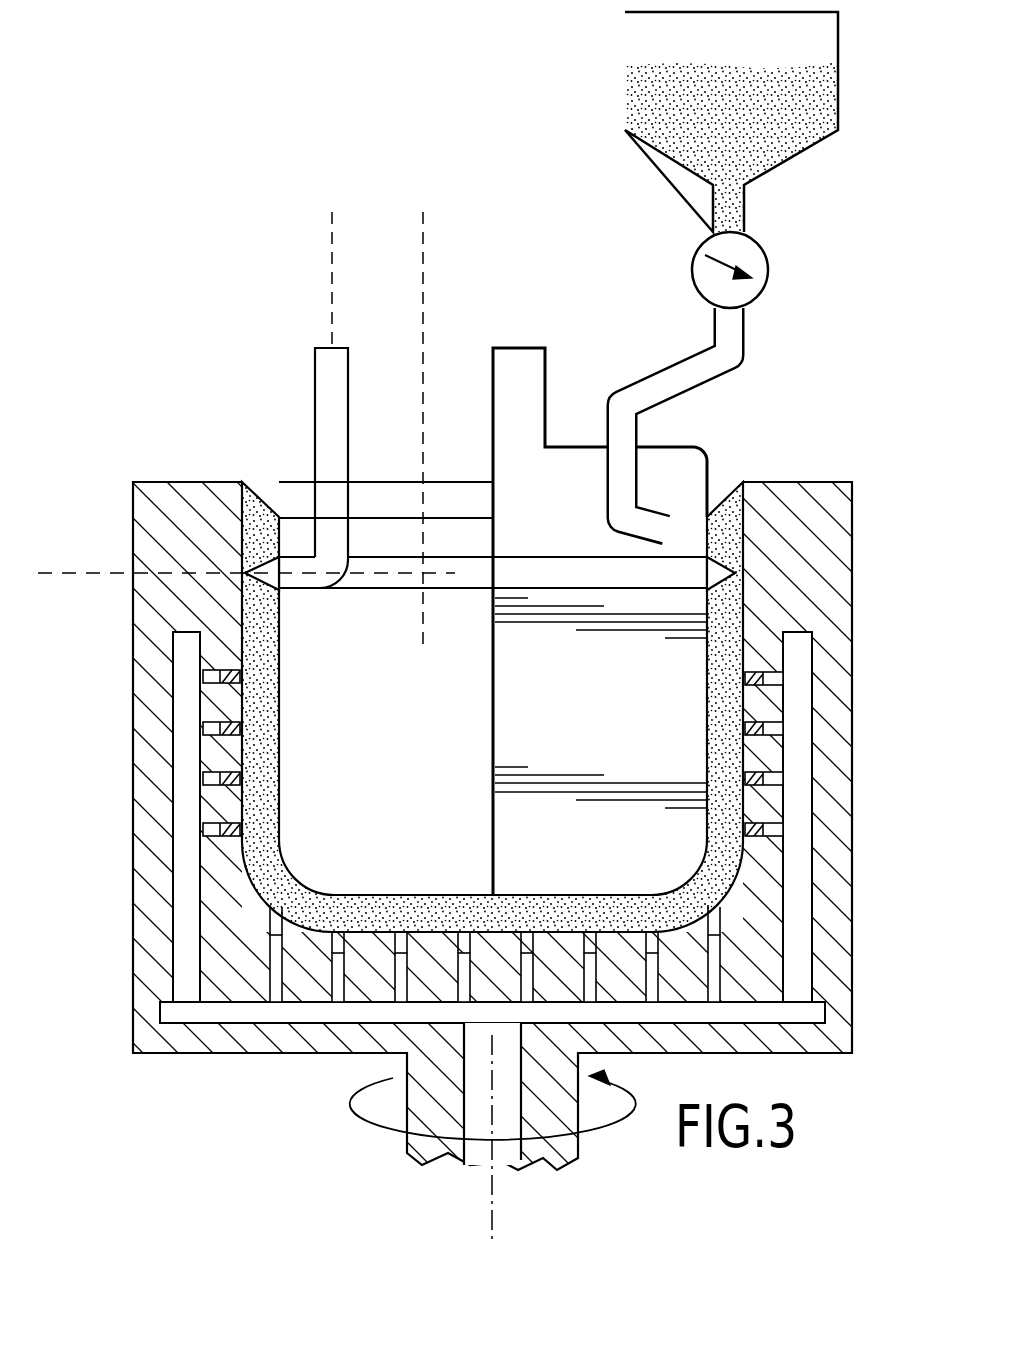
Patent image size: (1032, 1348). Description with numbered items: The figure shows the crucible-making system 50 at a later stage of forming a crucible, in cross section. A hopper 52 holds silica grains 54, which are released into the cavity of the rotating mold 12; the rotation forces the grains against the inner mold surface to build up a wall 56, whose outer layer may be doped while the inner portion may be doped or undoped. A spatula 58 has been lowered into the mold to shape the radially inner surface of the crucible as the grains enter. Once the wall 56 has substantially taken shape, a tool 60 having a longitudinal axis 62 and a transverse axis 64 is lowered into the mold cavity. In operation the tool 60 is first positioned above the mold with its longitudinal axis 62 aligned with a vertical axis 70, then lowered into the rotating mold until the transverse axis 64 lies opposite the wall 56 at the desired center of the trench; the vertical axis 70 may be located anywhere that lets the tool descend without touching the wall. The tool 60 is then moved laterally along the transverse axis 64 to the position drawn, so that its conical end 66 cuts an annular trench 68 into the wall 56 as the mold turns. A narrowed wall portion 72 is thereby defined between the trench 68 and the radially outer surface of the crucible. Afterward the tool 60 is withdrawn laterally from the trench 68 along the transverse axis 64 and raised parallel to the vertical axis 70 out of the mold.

The mold 12 is at (852, 569).
The system for making crucibles 50 is at (172, 366).
The hopper 52 is at (770, 122).
The silica grains 54 is at (710, 97).
The wall 56 is at (707, 704).
The spatula 58 is at (492, 708).
The tool 60 is at (315, 430).
The longitudinal axis 62 is at (332, 268).
The transverse axis 64 is at (91, 570).
The conical end 66 is at (262, 590).
The annular trench 68 is at (457, 588).
The vertical axis 70 is at (423, 265).
The narrowed wall portion 72 is at (740, 573).